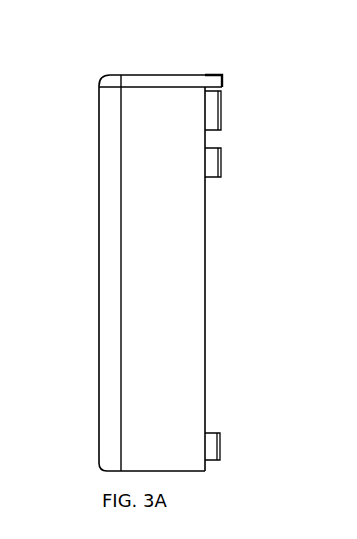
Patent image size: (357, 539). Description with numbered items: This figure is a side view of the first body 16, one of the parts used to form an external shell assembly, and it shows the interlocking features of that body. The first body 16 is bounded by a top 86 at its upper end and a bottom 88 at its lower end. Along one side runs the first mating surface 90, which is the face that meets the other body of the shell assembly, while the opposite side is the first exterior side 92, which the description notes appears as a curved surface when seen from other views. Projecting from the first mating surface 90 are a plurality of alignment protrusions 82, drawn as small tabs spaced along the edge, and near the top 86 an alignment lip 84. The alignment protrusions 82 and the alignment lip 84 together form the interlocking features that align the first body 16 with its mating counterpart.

The first body 16 is at (161, 257).
The alignment protrusions 82 is at (215, 160).
The alignment lip 84 is at (223, 82).
The top 86 is at (157, 73).
The bottom 88 is at (187, 472).
The first mating surface 90 is at (205, 300).
The first exterior side 92 is at (99, 205).